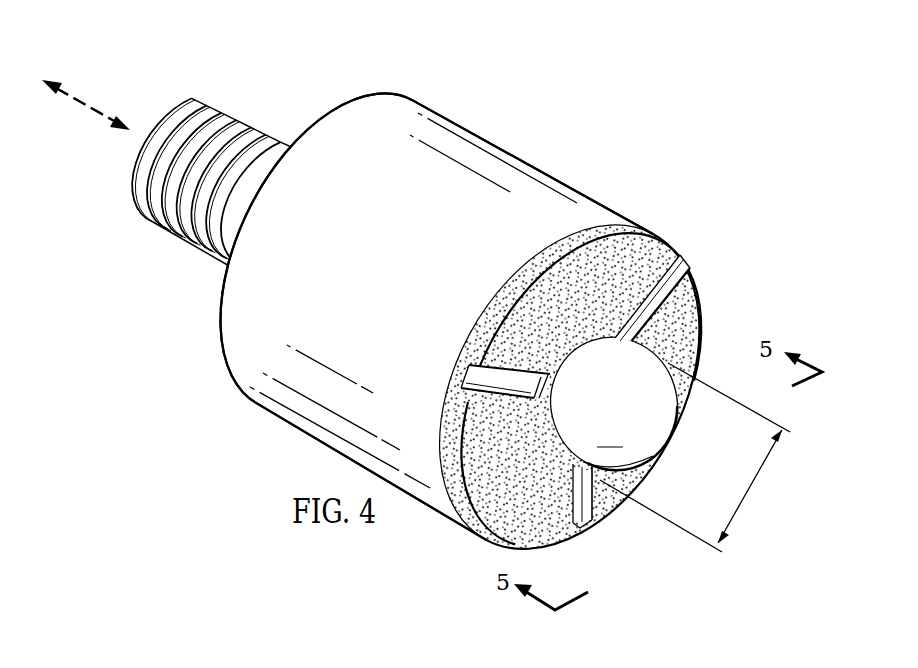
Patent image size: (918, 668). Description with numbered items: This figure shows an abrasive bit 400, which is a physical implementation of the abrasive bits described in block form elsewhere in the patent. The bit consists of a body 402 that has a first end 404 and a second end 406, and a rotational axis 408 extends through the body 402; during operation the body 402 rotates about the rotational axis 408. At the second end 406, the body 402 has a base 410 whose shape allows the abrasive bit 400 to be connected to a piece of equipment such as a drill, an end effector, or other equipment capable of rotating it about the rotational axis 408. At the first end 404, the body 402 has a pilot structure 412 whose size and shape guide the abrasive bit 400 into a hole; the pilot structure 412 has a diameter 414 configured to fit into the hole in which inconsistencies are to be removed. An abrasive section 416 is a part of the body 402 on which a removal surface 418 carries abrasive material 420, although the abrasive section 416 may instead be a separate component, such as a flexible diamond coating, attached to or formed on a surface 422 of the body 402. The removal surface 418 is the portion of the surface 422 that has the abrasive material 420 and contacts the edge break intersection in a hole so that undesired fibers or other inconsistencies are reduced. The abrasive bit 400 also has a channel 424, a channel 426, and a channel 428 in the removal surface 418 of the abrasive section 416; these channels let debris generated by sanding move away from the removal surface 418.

The abrasive bit 400 is at (634, 120).
The body 402 is at (544, 172).
The first end 404 is at (657, 407).
The second end 406 is at (165, 112).
The rotational axis 408 is at (102, 113).
The base 410 is at (237, 116).
The pilot structure 412 is at (655, 443).
The diameter 414 is at (750, 487).
The abrasive section 416 is at (483, 478).
The removal surface 418 is at (539, 537).
The abrasive material 420 is at (695, 314).
The surface 422 is at (216, 318).
The channel 424 is at (683, 260).
The channel 426 is at (475, 380).
The channel 428 is at (586, 508).